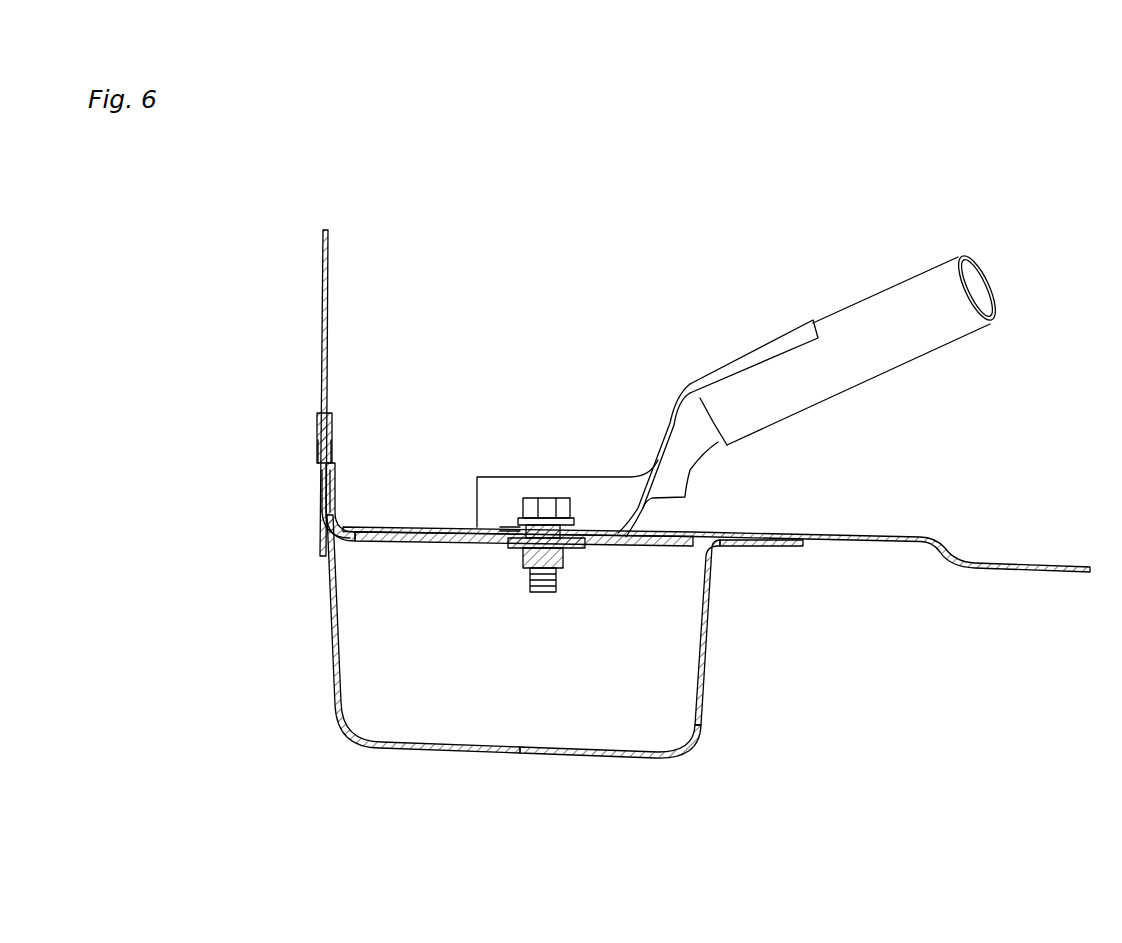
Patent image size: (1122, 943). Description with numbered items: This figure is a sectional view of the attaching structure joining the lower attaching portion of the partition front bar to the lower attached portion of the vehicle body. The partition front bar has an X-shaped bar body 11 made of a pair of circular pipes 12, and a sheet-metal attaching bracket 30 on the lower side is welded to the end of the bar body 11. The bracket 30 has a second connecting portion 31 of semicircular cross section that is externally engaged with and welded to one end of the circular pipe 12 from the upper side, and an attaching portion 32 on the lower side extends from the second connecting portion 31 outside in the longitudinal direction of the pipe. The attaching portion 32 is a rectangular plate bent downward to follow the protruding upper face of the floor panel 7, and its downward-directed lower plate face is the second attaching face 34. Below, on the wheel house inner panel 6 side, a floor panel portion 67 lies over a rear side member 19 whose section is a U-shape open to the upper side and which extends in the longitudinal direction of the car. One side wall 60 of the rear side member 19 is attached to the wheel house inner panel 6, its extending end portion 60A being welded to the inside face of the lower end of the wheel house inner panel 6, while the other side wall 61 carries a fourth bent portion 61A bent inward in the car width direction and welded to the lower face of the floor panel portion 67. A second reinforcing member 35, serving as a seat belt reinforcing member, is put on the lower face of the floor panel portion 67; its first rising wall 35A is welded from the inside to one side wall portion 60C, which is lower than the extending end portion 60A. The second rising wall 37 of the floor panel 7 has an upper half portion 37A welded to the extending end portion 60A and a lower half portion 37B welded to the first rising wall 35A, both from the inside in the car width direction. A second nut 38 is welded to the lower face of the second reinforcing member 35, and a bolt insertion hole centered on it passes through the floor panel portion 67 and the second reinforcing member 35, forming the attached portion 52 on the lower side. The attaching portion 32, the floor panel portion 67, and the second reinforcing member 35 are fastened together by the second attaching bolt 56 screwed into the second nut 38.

The wheel house inner panel 6 is at (320, 303).
The floor panel 7 is at (850, 536).
The bar body 11 is at (948, 272).
The circular pipe 12 is at (865, 279).
The rear side member 19 is at (527, 760).
The attaching bracket on the lower side 30 is at (557, 491).
The second connecting portion 31 is at (776, 340).
The attaching portion on the lower side 32 is at (590, 522).
The second attaching face 34 is at (480, 529).
The second reinforcing member 35 is at (392, 541).
The first rising wall 35A is at (325, 501).
The second rising wall 37 is at (393, 477).
The upper half portion of the second rising wall 37A is at (332, 440).
The lower half portion of the second rising wall 37B is at (337, 490).
The second nut 38 is at (573, 557).
The attached portion on the lower side 52 is at (495, 529).
The second attaching bolt 56 is at (557, 563).
The one side wall of the rear side member 60 is at (327, 628).
The extending end portion 60A is at (320, 438).
The one side wall portion 60C is at (322, 487).
The other side wall of the rear side member 61 is at (794, 632).
The fourth bent portion 61A is at (770, 544).
The floor panel portion 67 is at (447, 527).